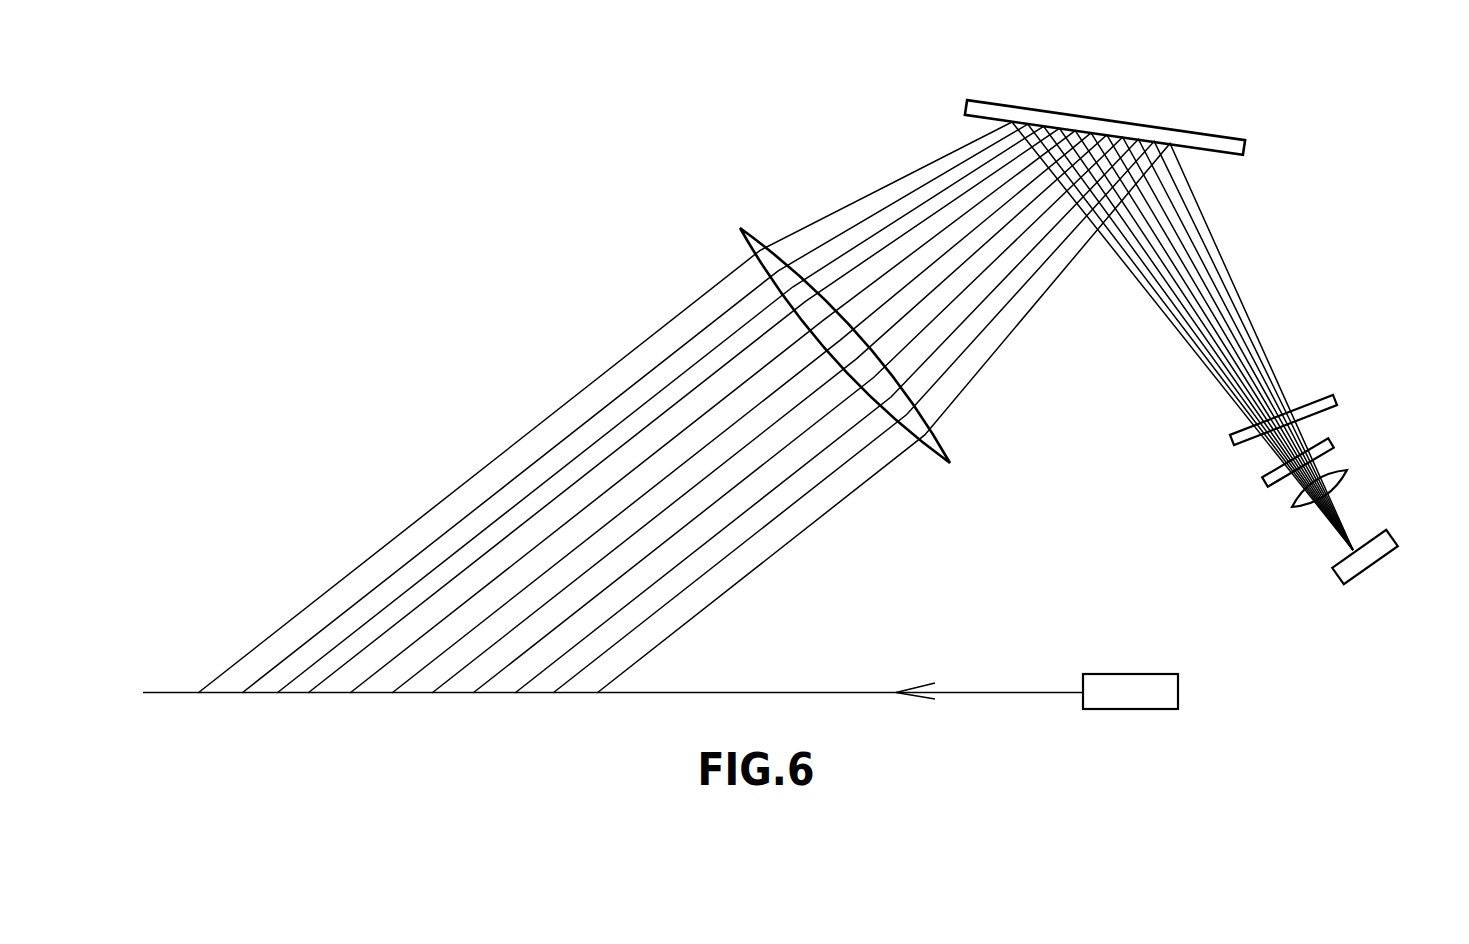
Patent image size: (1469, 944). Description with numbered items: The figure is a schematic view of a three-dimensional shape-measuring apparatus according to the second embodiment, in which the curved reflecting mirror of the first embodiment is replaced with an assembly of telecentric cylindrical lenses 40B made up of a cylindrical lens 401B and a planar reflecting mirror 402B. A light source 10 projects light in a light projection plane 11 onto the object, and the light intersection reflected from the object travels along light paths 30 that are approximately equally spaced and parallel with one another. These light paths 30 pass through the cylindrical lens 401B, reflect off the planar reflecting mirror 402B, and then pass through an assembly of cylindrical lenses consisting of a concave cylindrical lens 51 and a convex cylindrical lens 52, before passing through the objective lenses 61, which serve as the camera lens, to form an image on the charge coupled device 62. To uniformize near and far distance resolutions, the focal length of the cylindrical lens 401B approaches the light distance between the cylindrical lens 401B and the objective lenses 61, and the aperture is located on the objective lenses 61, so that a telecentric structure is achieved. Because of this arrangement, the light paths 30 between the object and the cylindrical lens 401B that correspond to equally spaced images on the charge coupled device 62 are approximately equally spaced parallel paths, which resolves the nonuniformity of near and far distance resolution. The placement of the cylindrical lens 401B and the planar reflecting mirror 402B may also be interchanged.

The light source 10 is at (1153, 687).
The light projection plane 11 is at (660, 697).
The light path 30 is at (498, 498).
The assembly of telecentric cylindrical lenses 40B is at (735, 7).
The cylindrical lens 401B is at (748, 235).
The planar reflecting mirror 402B is at (963, 103).
The concave cylindrical lens 51 is at (1337, 395).
The convex cylindrical lens 52 is at (1333, 440).
The objective lenses 61 is at (1347, 475).
The charge coupled device 62 is at (1380, 543).